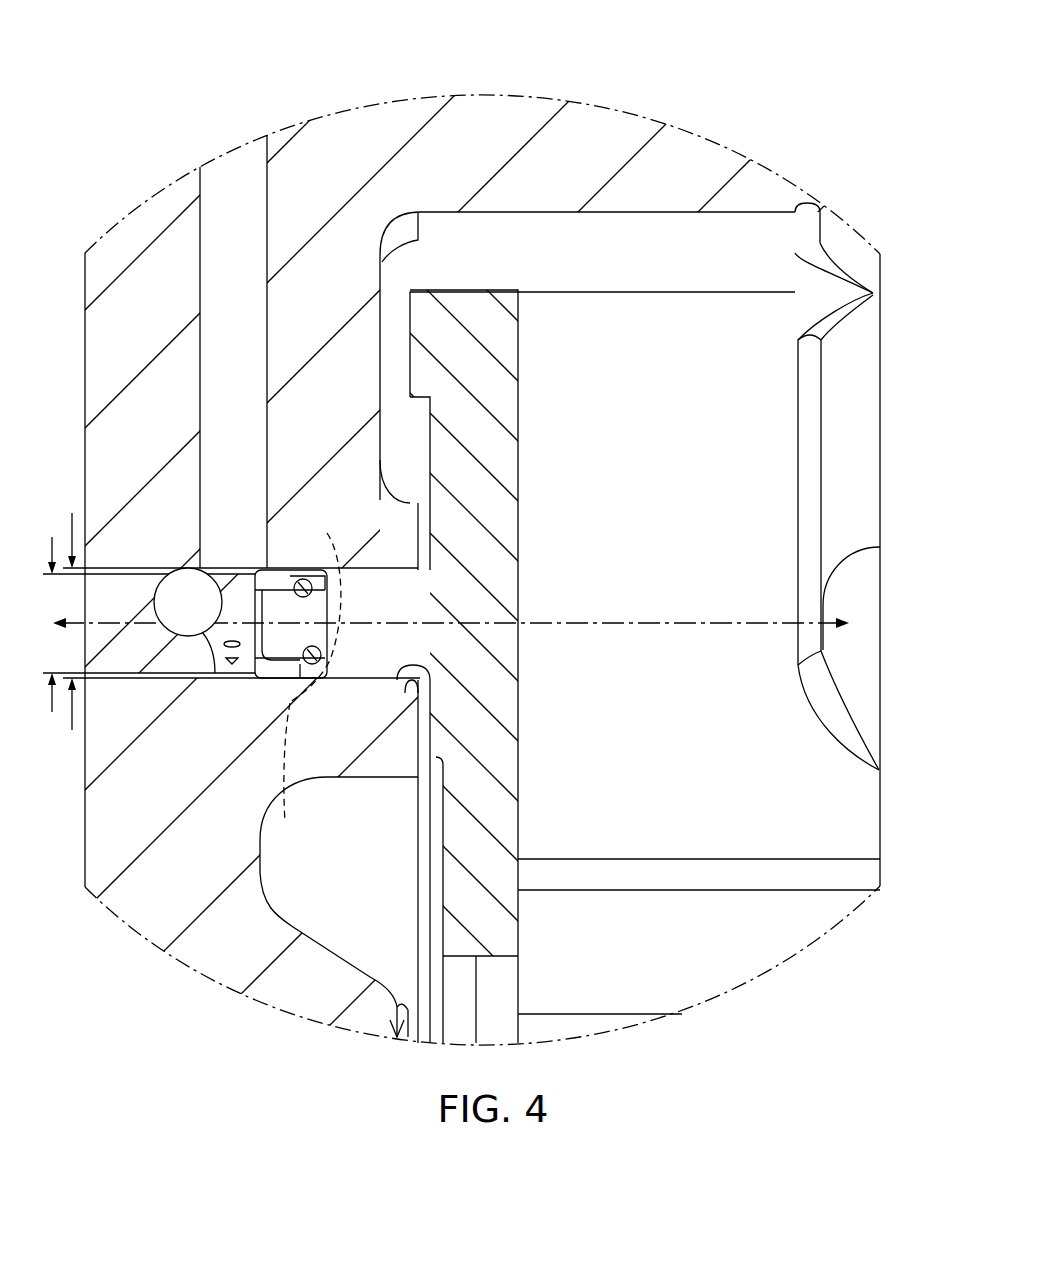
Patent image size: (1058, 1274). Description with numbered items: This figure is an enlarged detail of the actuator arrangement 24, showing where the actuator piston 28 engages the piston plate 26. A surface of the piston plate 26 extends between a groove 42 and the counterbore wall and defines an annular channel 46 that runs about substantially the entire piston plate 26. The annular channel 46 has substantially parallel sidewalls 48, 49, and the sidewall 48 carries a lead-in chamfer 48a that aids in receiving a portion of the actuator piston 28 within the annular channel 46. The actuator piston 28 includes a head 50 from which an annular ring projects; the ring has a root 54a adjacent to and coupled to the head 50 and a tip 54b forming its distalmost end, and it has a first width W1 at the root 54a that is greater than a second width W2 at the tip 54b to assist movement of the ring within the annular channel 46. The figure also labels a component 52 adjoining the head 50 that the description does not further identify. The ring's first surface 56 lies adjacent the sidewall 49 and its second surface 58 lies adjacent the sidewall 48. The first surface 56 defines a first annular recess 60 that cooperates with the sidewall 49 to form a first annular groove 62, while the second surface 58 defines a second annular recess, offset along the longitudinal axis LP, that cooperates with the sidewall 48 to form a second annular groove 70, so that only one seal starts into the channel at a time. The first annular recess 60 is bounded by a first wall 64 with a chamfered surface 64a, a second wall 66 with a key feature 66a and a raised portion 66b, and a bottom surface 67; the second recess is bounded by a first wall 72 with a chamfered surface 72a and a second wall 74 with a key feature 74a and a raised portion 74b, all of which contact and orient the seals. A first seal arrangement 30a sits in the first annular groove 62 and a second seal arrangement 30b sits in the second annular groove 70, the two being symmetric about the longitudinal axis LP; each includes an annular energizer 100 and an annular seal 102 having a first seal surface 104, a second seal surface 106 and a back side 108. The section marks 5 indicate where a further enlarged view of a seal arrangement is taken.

The actuator arrangement 24 is at (757, 47).
The piston plate 26 is at (748, 116).
The actuator piston 28 is at (588, 660).
The first seal arrangement 30a is at (327, 535).
The second seal arrangement 30b is at (283, 770).
The groove 42 is at (320, 930).
The annular channel 46 is at (262, 676).
The sidewall 48 is at (300, 690).
The lead-in chamfer 48a is at (400, 670).
The sidewall 49 is at (300, 565).
The head 50 is at (394, 326).
The sleeve 52 is at (519, 404).
The root 54a is at (420, 565).
The tip 54b is at (190, 660).
The first surface 56 is at (394, 560).
The second surface 58 is at (415, 700).
The first annular recess 60 is at (215, 645).
The first annular groove 62 is at (256, 568).
The first wall 64 is at (250, 568).
The chamfered surface 64a is at (285, 596).
The second wall 66 is at (340, 590).
The key feature 66a is at (322, 606).
The raised portion 66b is at (420, 580).
The surface 67 is at (280, 615).
The second annular groove 70 is at (287, 836).
The first wall 72 is at (265, 678).
The chamfered surface 72a is at (345, 615).
The second wall 74 is at (340, 650).
The key feature 74a is at (340, 655).
The raised portion 74b is at (345, 650).
The annular energizer 100 is at (290, 568).
The annular seal 102 is at (322, 555).
The first seal surface 104 is at (350, 668).
The second seal surface 106 is at (335, 690).
The back side 108 is at (284, 568).
The section line 5- 5 is at (296, 520).
The first width W1 is at (232, 609).
The second width W2 is at (139, 611).
The longitudinal axis LP is at (738, 622).